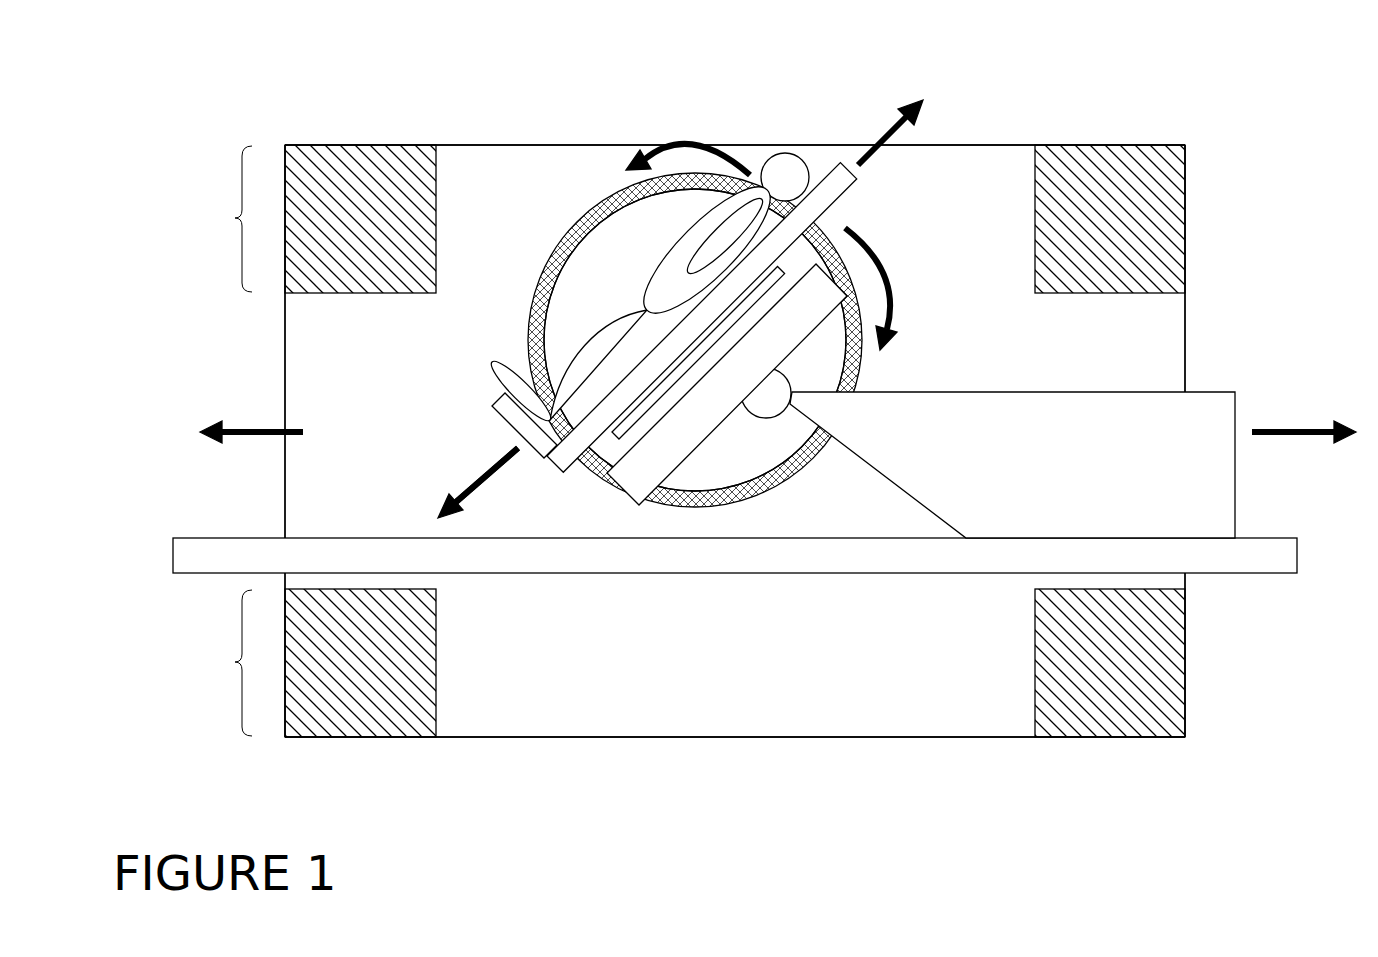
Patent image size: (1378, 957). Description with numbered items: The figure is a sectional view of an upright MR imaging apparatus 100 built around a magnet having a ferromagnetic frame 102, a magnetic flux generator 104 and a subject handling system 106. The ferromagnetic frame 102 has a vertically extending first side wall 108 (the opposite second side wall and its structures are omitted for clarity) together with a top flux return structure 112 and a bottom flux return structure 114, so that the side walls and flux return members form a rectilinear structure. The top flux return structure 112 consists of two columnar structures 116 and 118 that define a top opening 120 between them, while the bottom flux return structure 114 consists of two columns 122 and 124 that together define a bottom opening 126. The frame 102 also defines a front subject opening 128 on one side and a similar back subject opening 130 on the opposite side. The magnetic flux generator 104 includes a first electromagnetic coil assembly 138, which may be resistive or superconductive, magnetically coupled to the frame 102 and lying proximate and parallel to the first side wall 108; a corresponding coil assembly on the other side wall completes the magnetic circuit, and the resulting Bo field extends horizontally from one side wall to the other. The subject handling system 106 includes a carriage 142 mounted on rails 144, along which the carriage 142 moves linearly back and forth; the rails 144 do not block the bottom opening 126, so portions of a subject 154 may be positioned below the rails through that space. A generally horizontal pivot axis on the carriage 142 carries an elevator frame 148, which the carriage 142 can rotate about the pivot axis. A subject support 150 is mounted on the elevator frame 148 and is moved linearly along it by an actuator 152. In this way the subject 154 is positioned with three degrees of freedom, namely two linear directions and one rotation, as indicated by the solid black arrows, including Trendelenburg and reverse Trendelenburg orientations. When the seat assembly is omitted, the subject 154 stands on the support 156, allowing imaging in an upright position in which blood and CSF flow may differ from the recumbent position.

The upright MR imaging apparatus 100 is at (734, 905).
The ferromagnetic frame 102 is at (1215, 39).
The magnetic flux generator 104 is at (683, 199).
The subject handling system 106 is at (481, 455).
The first side wall 108 is at (453, 145).
The top flux return structure 112 is at (221, 219).
The bottom flux return structure 114 is at (221, 663).
The columnar structure 116 is at (342, 193).
The columnar structure 118 is at (1106, 195).
The top opening 120 is at (774, 79).
The column 122 is at (342, 677).
The column 124 is at (1106, 677).
The bottom opening 126 is at (492, 785).
The front subject opening 128 is at (239, 377).
The back subject opening 130 is at (1234, 377).
The first electromagnetic coil assembly 138 is at (553, 263).
The carriage 142 is at (1237, 517).
The rails 144 is at (1250, 574).
The elevator frame 148 is at (720, 430).
The subject support 150 is at (575, 450).
The actuator 152 is at (640, 432).
The subject 154 is at (787, 174).
The support 156 is at (532, 445).